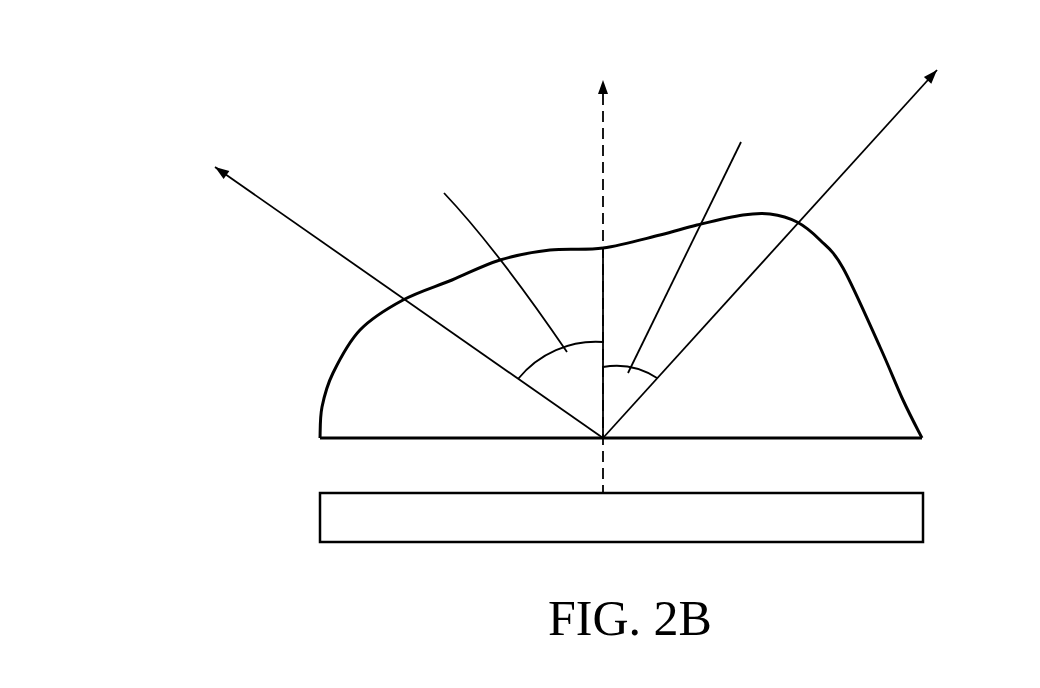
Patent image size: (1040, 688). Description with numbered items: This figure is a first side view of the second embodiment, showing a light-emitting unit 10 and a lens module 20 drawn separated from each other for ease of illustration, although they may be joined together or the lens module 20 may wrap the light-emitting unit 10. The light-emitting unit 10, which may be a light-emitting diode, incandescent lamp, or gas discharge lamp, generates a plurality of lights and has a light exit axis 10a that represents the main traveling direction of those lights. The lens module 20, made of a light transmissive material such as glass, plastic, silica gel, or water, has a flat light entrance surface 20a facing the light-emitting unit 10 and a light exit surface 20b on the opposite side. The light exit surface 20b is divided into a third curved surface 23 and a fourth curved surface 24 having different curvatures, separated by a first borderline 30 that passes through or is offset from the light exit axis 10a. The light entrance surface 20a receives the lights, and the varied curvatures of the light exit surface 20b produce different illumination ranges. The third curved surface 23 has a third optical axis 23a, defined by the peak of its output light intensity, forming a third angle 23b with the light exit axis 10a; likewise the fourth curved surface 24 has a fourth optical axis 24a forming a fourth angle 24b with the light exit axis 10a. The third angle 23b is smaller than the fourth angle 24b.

The light-emitting unit 10 is at (903, 493).
The light exit axis 10a is at (599, 269).
The lens module 20 is at (594, 333).
The light entrance surface 20a is at (363, 440).
The light exit surface 20b is at (618, 289).
The third curved surface 23 is at (852, 355).
The third optical axis 23a is at (783, 240).
The third angle 23b is at (741, 142).
The fourth curved surface 24 is at (367, 387).
The fourth optical axis 24a is at (386, 288).
The fourth angle 24b is at (444, 193).
The first borderline 30 is at (607, 277).